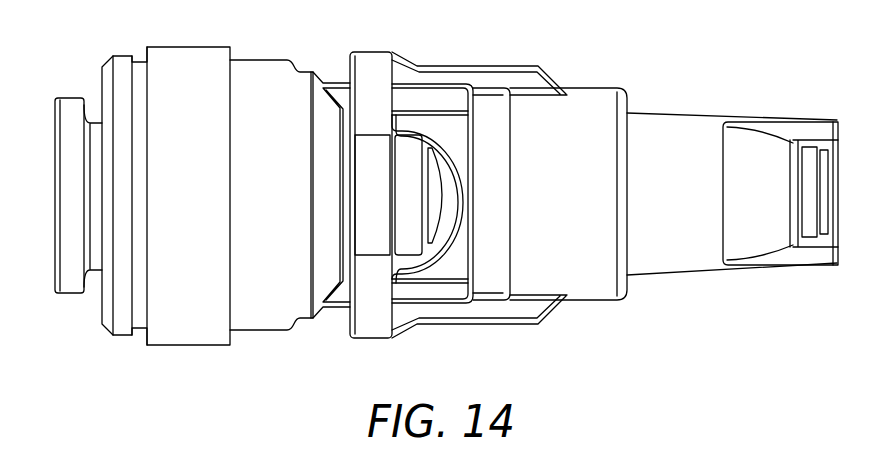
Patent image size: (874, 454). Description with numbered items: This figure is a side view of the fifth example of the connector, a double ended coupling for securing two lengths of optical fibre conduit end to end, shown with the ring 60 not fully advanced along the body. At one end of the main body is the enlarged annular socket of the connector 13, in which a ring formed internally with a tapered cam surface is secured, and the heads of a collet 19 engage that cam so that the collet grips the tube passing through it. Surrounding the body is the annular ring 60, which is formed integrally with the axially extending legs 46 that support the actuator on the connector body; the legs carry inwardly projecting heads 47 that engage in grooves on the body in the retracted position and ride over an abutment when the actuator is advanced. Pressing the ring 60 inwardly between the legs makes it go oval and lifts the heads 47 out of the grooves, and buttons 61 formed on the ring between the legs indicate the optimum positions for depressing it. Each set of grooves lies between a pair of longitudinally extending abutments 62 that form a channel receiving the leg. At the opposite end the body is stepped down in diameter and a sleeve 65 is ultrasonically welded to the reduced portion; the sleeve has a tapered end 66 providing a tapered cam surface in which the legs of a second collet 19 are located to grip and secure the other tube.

The connector 13 is at (199, 210).
The collet 19 is at (70, 98).
The axially extending legs 46 is at (580, 208).
The inwardly projecting heads 47 is at (503, 66).
The ring 60 is at (370, 52).
The buttons 61 is at (372, 197).
The longitudinally extending abutments 62 is at (430, 100).
The sleeve 65 is at (689, 206).
The tapered end 66 is at (775, 206).